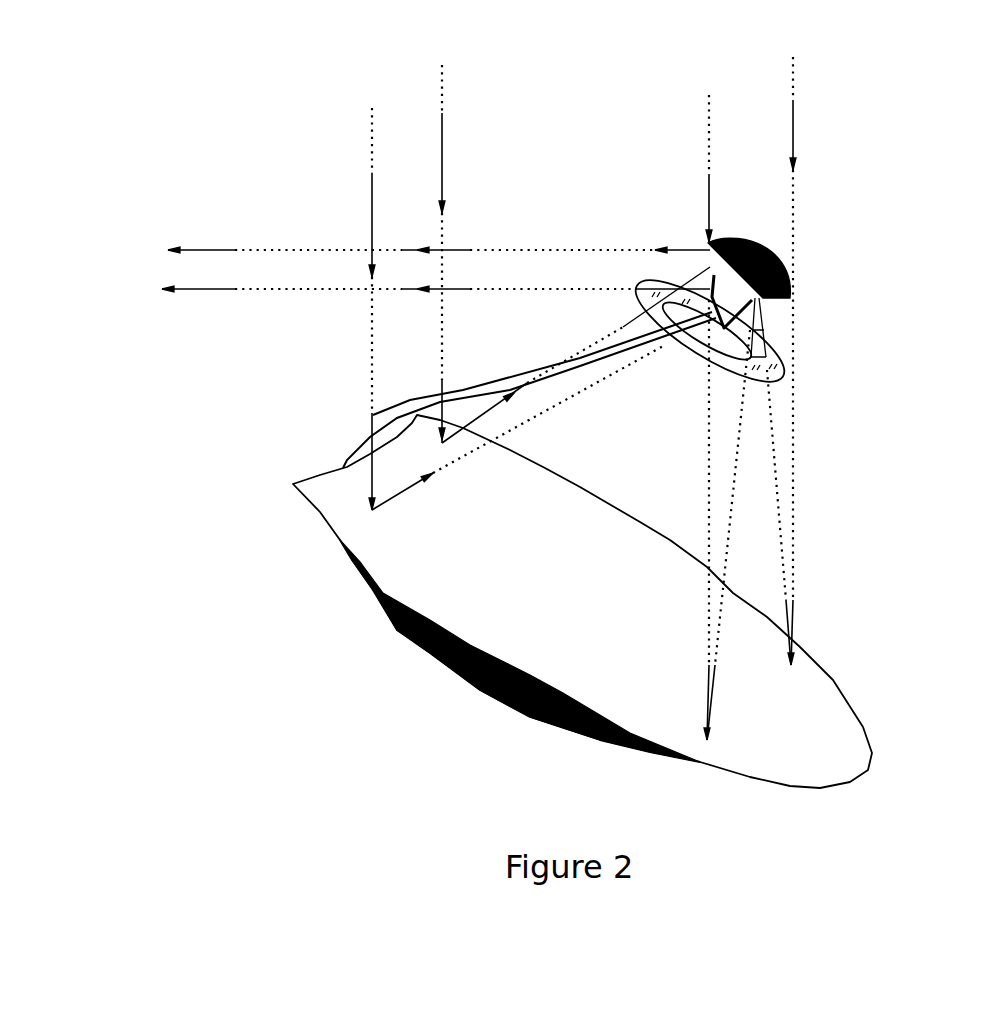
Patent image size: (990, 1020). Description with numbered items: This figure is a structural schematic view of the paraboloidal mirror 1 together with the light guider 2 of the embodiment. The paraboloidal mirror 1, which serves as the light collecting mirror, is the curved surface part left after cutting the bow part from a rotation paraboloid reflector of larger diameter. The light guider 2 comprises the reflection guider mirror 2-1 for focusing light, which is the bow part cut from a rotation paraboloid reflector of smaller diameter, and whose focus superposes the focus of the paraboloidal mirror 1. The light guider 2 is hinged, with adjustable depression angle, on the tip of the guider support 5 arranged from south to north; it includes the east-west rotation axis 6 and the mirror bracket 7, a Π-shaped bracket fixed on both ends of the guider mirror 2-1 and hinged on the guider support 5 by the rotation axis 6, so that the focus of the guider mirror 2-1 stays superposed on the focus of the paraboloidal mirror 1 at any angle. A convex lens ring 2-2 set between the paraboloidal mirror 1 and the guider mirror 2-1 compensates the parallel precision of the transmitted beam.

The paraboloidal mirror 1 is at (387, 600).
The light guider 2 is at (797, 322).
The reflection guider mirror 2-1 is at (837, 256).
The convex lens ring 2-2 is at (782, 378).
The guider support 5 is at (386, 418).
The rotation axis 6 is at (722, 331).
The mirror bracket 7 is at (762, 330).